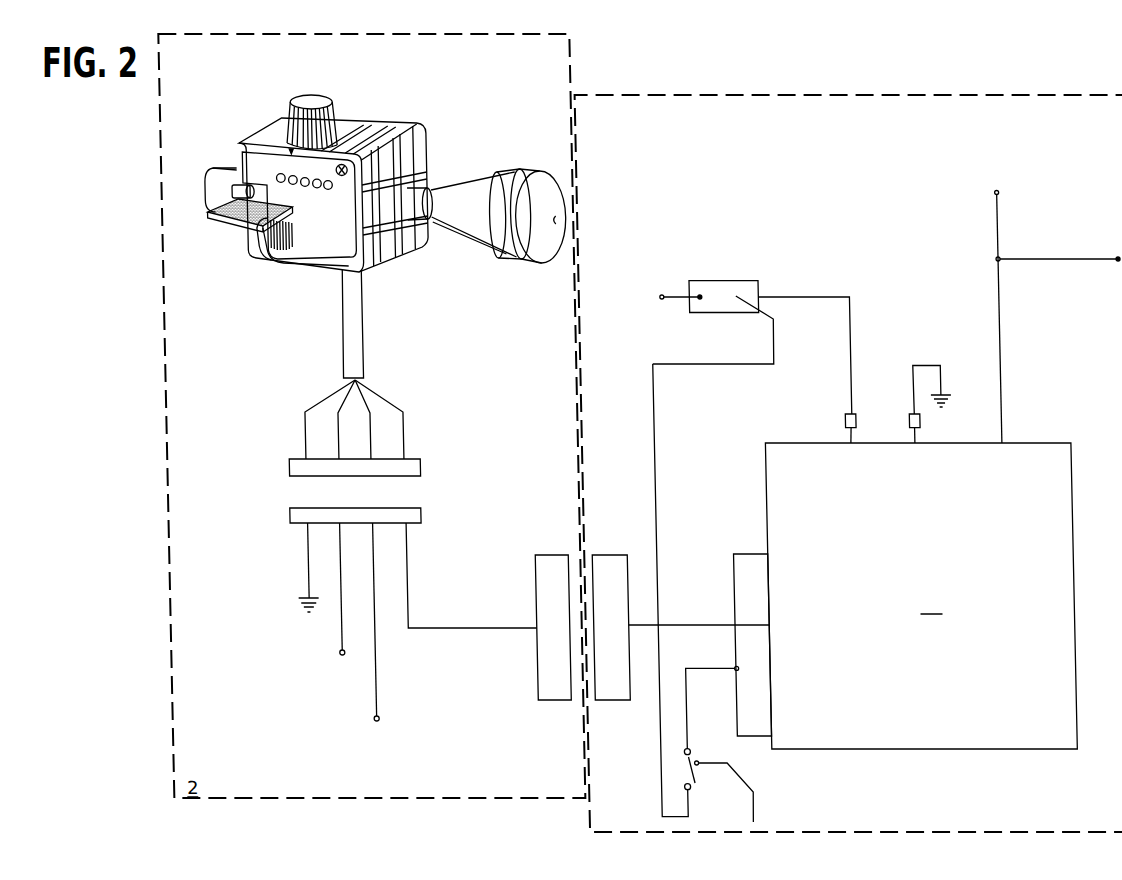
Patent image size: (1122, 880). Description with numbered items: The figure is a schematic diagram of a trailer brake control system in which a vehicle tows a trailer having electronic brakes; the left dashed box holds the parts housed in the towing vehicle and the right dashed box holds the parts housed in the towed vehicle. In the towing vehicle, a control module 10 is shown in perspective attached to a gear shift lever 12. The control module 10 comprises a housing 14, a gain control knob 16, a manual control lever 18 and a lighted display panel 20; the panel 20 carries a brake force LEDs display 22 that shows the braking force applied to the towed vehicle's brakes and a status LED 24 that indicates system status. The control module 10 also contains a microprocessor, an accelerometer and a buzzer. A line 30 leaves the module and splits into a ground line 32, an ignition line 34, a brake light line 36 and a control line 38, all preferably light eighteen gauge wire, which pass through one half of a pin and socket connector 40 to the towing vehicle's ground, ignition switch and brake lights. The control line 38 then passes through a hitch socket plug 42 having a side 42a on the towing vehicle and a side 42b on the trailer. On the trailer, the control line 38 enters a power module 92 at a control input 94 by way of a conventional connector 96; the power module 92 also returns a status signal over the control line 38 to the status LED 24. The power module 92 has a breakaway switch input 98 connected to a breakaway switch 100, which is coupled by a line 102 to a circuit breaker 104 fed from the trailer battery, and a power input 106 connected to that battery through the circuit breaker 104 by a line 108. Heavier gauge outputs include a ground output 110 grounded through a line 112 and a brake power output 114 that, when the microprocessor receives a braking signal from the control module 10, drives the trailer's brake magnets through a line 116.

The control module 10 is at (320, 176).
The gear shift lever 12 is at (480, 185).
The housing 14 is at (388, 118).
The gain control knob 16 is at (313, 100).
The manual control lever 18 is at (218, 232).
The lighted display panel 20 is at (238, 146).
The brake force LEDs display 22 is at (308, 196).
The status LED 24 is at (328, 197).
The line 30 is at (357, 315).
The ground line 32 is at (312, 406).
The ignition line 34 is at (338, 449).
The brake light line 36 is at (371, 449).
The control line 38 is at (392, 404).
The pin and socket connector 40 is at (276, 465).
The hitch socket plug 42 is at (576, 617).
The towing vehicle side of hitch socket plug 42a is at (536, 702).
The towed vehicle side of hitch socket plug 42b is at (606, 702).
The power module 92 is at (921, 596).
The control input 94 is at (763, 625).
The connector 96 is at (733, 554).
The breakaway switch input 98 is at (762, 668).
The breakaway switch 100 is at (683, 752).
The line 102 is at (653, 441).
The circuit breaker 104 is at (706, 281).
The power input 106 is at (849, 443).
The line 108 is at (816, 297).
The ground output 110 is at (912, 443).
The line 112 is at (921, 365).
The brake power output 114 is at (998, 443).
The line 116 is at (1001, 325).